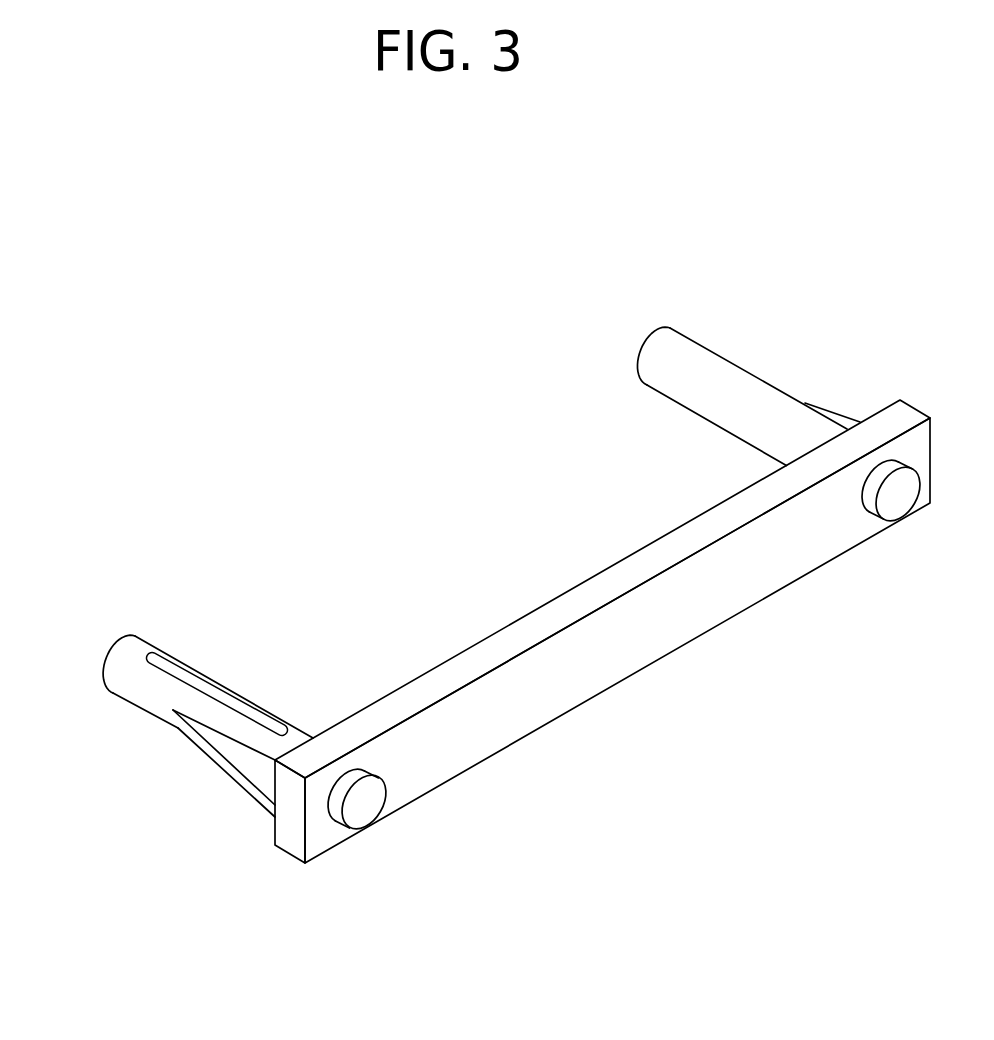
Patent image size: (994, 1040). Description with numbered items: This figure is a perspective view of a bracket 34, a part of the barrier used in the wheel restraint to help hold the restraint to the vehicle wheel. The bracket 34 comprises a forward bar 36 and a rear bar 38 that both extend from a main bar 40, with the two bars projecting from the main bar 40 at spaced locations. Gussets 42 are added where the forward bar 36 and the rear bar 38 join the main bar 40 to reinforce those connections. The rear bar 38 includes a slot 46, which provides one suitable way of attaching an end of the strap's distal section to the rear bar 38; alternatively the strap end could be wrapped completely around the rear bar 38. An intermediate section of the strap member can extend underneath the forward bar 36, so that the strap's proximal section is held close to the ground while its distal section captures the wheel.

The bracket 34 is at (288, 370).
The forward bar 36 is at (712, 347).
The rear bar 38 is at (133, 705).
The main bar 40 is at (490, 710).
The gussets 42 is at (840, 415).
The slot 46 is at (205, 687).